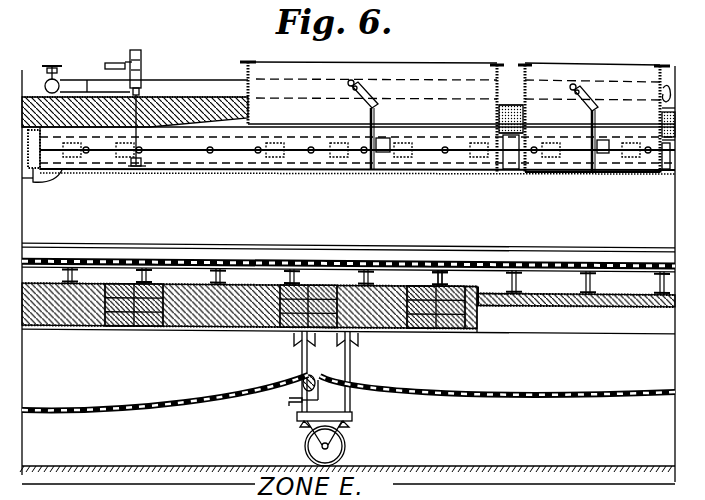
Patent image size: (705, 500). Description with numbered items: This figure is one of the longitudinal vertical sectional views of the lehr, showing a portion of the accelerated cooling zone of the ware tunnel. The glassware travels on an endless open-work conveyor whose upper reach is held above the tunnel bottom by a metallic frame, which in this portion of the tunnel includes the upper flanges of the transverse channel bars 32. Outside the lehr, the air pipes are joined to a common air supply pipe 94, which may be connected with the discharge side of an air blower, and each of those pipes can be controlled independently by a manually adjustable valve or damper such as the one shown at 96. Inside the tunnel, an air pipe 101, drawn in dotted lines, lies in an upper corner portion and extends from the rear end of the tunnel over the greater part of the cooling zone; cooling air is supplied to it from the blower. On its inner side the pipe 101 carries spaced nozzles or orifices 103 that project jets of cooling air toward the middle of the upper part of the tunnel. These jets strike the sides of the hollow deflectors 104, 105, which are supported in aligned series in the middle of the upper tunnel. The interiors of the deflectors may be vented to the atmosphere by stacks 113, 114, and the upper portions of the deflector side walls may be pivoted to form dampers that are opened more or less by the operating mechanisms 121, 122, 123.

The transverse channel bars 32 is at (160, 247).
The common air supply pipe 94 is at (163, 85).
The manually adjustable valve or damper 96 is at (60, 73).
The air pipe 101 is at (478, 170).
The nozzles or orifices 103 is at (86, 156).
The deflector 104 is at (330, 172).
The deflector 105 is at (565, 173).
The vent or stack 113 is at (496, 66).
The vent or stack 114 is at (657, 74).
The operating mechanism 121 is at (182, 96).
The operating mechanism 122 is at (376, 128).
The operating mechanism 123 is at (595, 130).